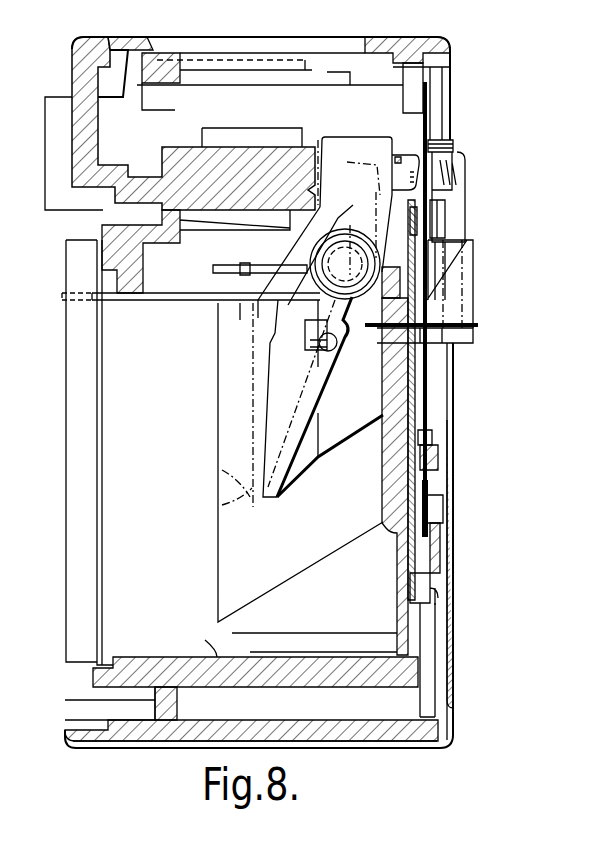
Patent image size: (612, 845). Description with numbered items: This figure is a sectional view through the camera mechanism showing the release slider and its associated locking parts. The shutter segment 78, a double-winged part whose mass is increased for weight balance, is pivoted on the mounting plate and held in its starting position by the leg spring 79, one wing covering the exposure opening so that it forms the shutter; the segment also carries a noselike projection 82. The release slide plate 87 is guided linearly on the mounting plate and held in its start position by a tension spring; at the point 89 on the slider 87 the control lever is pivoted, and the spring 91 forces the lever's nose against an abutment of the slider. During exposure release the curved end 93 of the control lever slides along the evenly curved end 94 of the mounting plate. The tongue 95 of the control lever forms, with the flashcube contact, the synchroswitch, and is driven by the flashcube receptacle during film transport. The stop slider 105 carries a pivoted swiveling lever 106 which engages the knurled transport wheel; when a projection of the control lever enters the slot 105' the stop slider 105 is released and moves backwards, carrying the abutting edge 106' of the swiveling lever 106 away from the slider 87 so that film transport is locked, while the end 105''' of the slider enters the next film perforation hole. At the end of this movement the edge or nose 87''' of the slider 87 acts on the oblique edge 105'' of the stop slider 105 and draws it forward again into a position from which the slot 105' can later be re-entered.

The shutter segment 78 is at (430, 462).
The leg spring 79 is at (425, 495).
The noselike projection 82 is at (430, 448).
The release slide plate 87 is at (459, 400).
The edge or nose 87''' is at (469, 227).
The pivot point 89 is at (432, 213).
The spring 91 is at (435, 245).
The curved end of control lever 93 is at (453, 148).
The curved end of mounting plate 94 is at (462, 177).
The tongue 95 is at (413, 98).
The stop slider 105 is at (317, 299).
The slot 105' is at (454, 351).
The oblique edge 105'' is at (483, 284).
The end of stop slider 105''' is at (56, 319).
The swiveling lever 106 is at (307, 308).
The abutting edge 106' is at (392, 149).